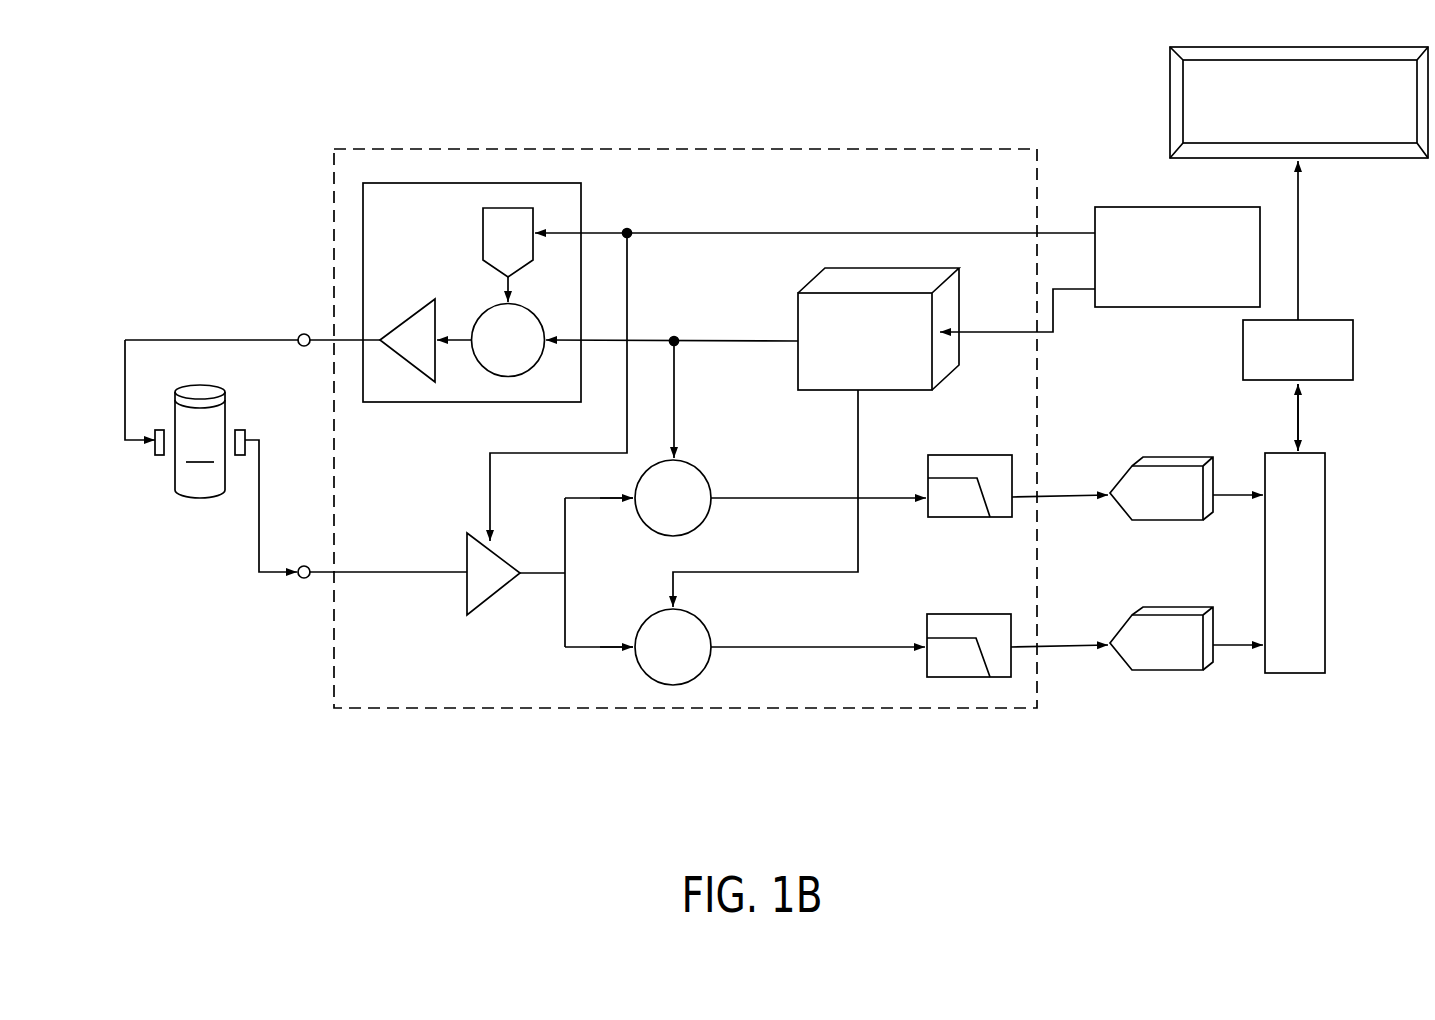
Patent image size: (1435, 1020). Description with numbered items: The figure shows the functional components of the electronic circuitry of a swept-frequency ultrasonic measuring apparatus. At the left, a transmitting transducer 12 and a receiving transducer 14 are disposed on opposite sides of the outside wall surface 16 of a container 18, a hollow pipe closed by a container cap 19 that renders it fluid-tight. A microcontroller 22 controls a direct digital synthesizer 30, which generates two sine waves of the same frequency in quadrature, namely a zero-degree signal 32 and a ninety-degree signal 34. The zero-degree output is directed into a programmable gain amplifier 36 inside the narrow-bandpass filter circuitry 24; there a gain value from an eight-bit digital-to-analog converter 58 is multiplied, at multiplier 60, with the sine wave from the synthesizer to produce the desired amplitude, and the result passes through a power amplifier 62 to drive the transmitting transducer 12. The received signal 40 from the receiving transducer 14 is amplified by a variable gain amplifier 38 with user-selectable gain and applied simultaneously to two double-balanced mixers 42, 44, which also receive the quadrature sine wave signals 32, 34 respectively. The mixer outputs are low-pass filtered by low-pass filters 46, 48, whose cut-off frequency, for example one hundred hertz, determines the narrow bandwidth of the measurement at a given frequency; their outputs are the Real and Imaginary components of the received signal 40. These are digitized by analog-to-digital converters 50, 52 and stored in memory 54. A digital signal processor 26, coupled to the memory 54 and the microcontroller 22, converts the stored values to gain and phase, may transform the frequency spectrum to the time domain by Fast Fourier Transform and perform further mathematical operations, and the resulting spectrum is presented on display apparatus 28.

The transmitting transducer 12 is at (160, 458).
The receiving transducer 14 is at (247, 430).
The outside wall surface 16 is at (164, 472).
The container 18 is at (200, 447).
The container cap 19 is at (204, 389).
The microcontroller 22 is at (1163, 299).
The narrow-bandpass filter circuitry 24 is at (794, 148).
The digital signal processor 26 is at (1241, 381).
The display apparatus 28 is at (1172, 163).
The direct digital synthesizer 30 is at (803, 394).
The 0° signal 32 is at (676, 382).
The 90° signal 34 is at (860, 415).
The programmable gain amplifier 36 is at (391, 246).
The variable gain amplifier 38 is at (473, 620).
The received signal 40 is at (272, 575).
The double-balanced mixer 42 is at (659, 513).
The double-balanced mixer 44 is at (659, 662).
The low-pass filter 46 is at (938, 453).
The low-pass filter 48 is at (938, 612).
The analog-to-digital converter 50 is at (1149, 508).
The analog-to-digital converter 52 is at (1149, 658).
The memory 54 is at (1270, 676).
The digital-to-analog converter 58 is at (494, 255).
The multiplier 60 is at (494, 355).
The power amplifier 62 is at (401, 355).